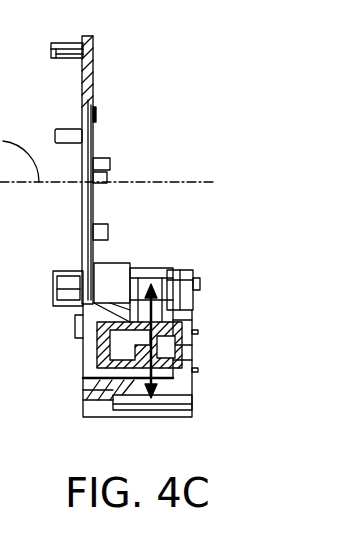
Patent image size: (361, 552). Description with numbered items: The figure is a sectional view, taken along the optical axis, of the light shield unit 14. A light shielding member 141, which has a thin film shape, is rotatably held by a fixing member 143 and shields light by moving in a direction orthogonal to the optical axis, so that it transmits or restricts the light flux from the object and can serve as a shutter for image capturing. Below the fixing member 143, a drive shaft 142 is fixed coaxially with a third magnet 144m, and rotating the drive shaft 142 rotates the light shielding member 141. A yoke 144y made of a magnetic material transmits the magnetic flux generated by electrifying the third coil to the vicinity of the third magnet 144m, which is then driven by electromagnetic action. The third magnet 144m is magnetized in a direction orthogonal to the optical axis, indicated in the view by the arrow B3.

The light shield unit 14 is at (213, 39).
The light shielding member 141 is at (83, 214).
The drive shaft 142 is at (97, 351).
The fixing member 143 is at (92, 67).
The yoke 144y is at (166, 290).
The third magnet 144m is at (129, 388).
The arrow B3 is at (173, 356).